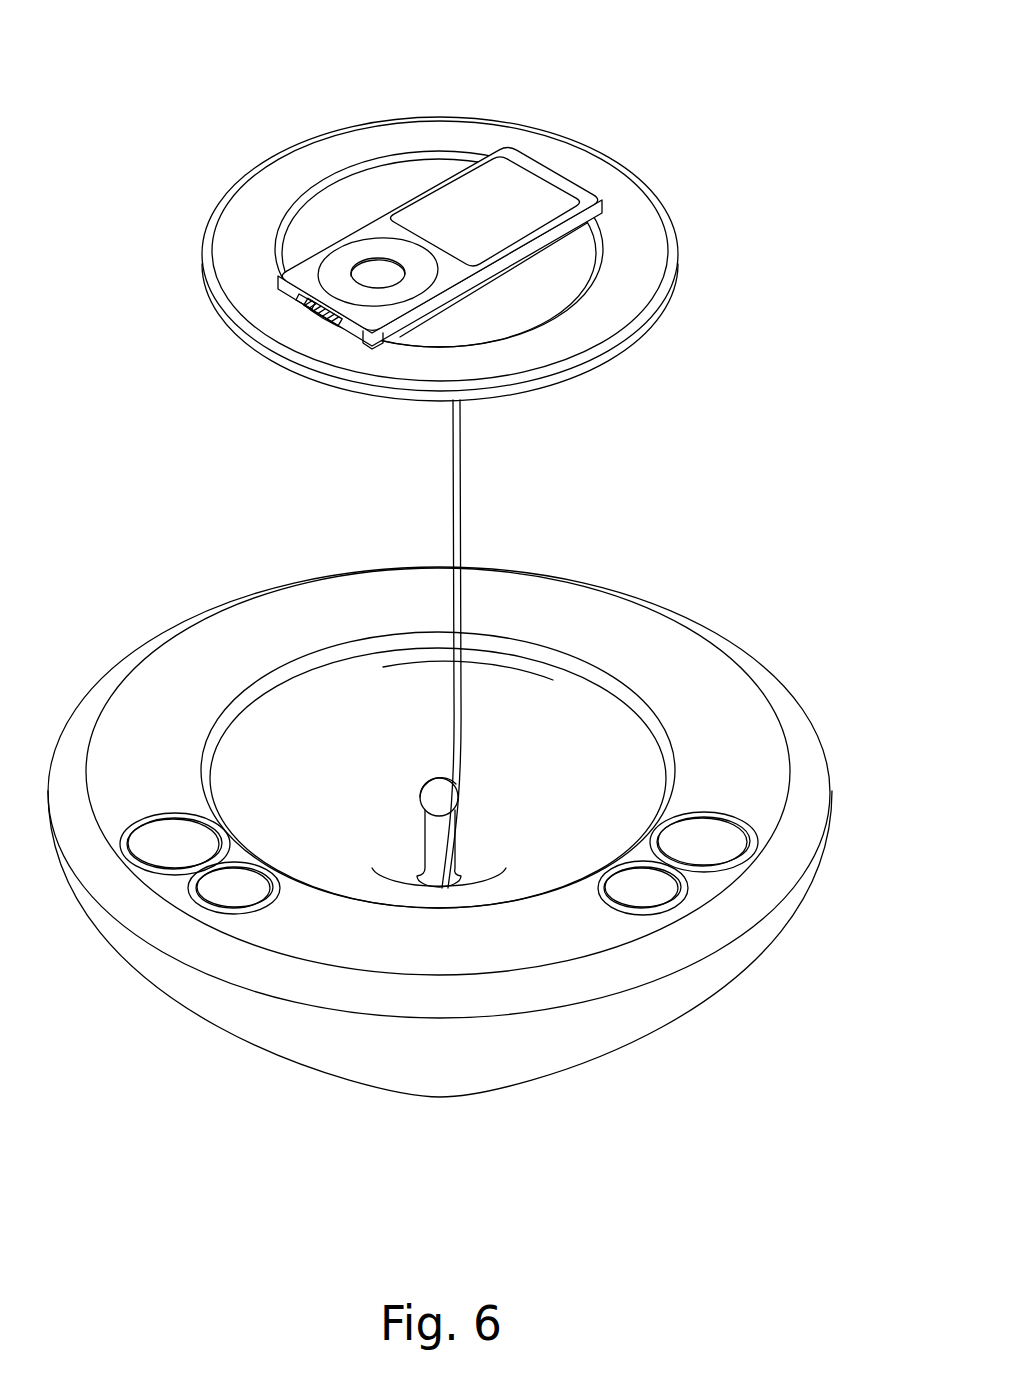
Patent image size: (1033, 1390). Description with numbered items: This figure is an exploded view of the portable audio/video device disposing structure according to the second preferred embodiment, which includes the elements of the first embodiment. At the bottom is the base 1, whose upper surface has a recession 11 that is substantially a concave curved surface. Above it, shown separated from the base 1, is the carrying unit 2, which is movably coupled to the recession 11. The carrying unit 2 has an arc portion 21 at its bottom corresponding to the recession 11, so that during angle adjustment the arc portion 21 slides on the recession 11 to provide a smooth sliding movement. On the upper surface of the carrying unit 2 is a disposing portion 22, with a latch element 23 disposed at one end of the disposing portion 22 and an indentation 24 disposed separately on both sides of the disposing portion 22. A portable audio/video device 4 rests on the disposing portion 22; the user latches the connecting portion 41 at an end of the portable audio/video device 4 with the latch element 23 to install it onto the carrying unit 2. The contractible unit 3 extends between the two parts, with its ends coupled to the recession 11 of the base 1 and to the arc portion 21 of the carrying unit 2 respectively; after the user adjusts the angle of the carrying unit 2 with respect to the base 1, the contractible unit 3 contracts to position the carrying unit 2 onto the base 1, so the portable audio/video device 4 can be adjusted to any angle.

The base 1 is at (483, 832).
The recession 11 is at (638, 763).
The carrying unit 2 is at (412, 211).
The arc portion 21 is at (613, 359).
The disposing portion 22 is at (600, 194).
The latch element 23 is at (303, 305).
The indentation 24 is at (210, 275).
The contractible unit 3 is at (457, 518).
The portable audio/video device 4 is at (357, 183).
The player connector 41 is at (306, 303).